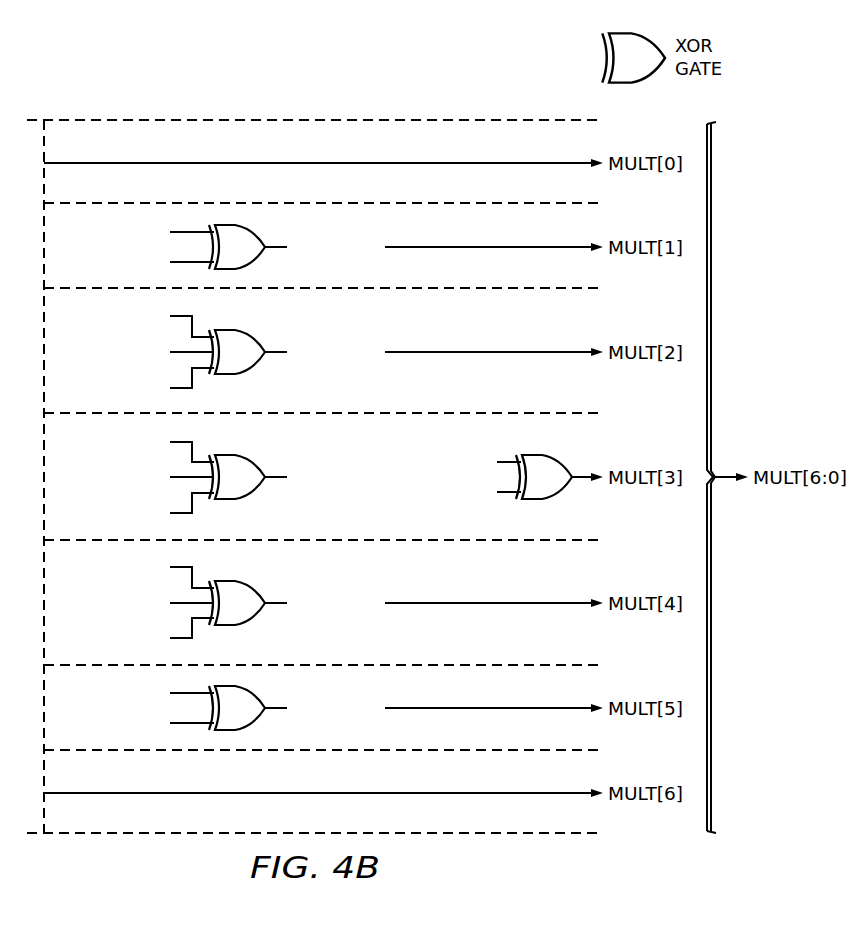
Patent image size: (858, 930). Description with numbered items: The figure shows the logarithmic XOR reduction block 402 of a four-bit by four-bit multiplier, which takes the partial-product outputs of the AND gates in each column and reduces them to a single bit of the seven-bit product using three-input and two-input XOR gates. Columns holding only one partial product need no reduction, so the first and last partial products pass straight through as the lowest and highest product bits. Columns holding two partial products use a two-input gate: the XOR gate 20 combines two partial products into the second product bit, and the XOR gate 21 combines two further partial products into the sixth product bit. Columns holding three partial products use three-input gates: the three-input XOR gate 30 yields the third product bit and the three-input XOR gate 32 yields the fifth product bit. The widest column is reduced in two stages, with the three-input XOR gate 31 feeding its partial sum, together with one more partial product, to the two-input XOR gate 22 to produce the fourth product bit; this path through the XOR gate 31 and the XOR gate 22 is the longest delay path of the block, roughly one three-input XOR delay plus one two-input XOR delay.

The logarithmic XOR reduction block 402 is at (603, 106).
The XOR gate 20 is at (355, 247).
The three-input XOR gate 30 is at (355, 352).
The three-input XOR gate 31 is at (244, 478).
The two-input XOR gate 22 is at (503, 477).
The three-input XOR gate 32 is at (355, 603).
The two-input XOR gate 21 is at (355, 708).